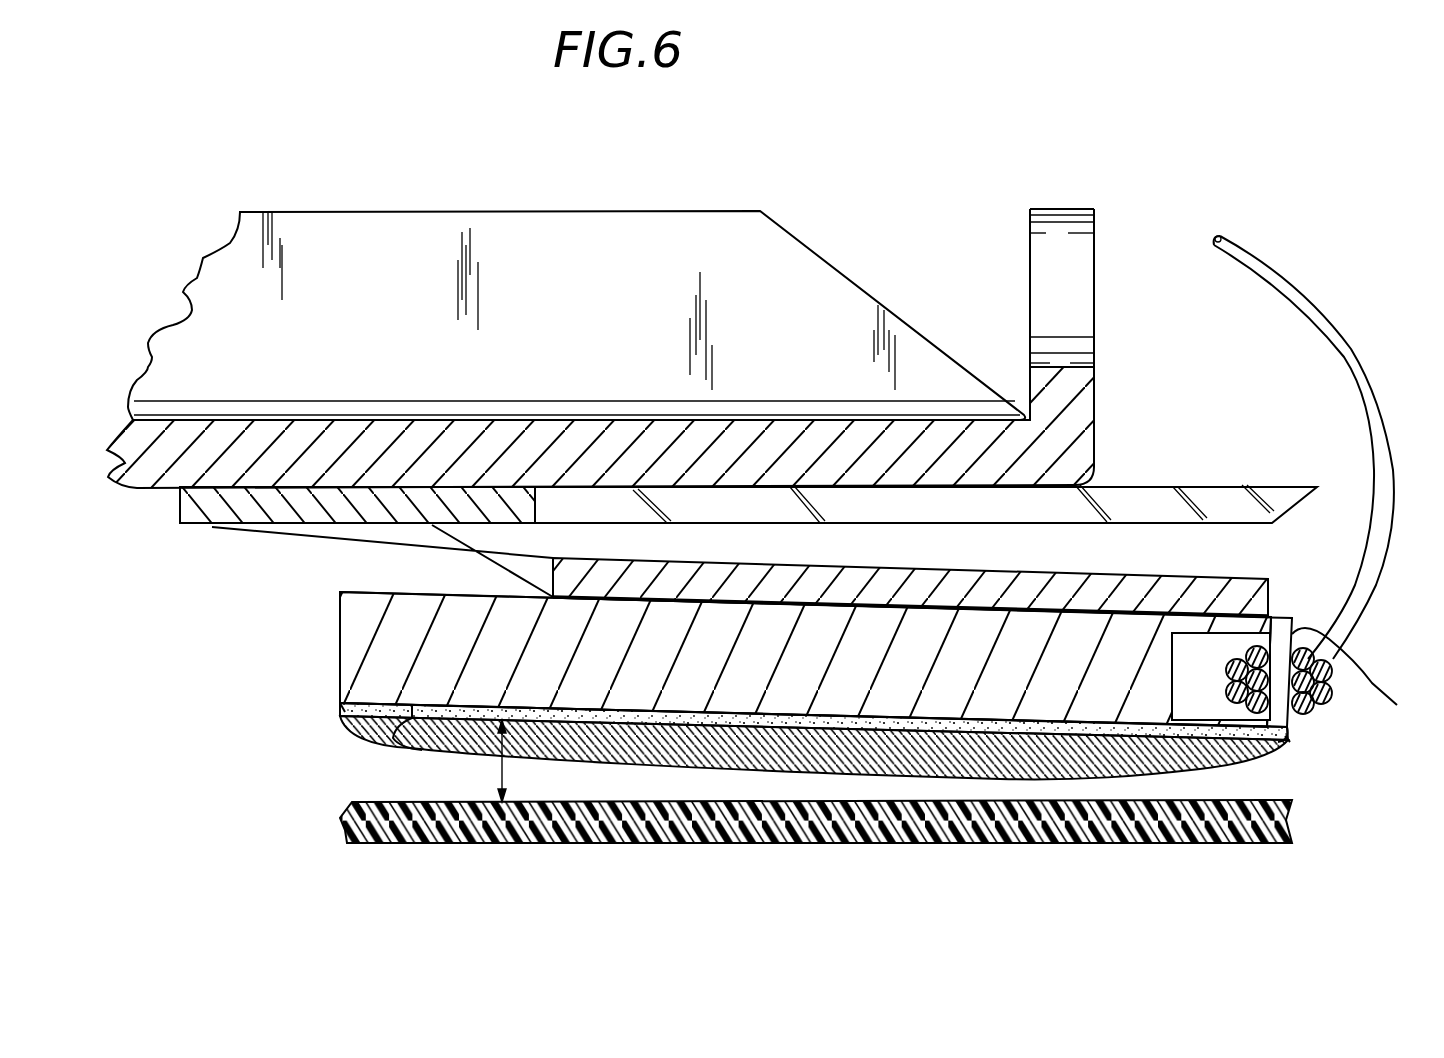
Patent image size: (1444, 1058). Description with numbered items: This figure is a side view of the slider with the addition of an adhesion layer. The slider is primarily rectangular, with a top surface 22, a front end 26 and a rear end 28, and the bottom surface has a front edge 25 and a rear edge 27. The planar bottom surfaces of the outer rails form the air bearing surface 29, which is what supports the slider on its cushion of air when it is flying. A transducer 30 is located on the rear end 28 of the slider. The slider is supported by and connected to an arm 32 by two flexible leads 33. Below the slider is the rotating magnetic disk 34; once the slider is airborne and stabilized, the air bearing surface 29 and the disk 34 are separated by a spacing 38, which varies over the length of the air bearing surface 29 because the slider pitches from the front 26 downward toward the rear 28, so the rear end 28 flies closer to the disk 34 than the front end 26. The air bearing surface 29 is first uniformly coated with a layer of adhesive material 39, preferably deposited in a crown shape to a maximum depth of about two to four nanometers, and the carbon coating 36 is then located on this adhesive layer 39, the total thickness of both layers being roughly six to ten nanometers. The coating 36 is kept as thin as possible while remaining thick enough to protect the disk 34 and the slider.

The top surface 22 is at (820, 669).
The front edge 25 is at (340, 710).
The front end 26 is at (340, 673).
The rear edge 27 is at (1290, 727).
The rear end 28 is at (1324, 480).
The air bearing surface 29 is at (393, 738).
The transducer 30 is at (1332, 697).
The arm 32 is at (1027, 283).
The flexible leads 33 is at (357, 537).
The rotating magnetic disk 34 is at (343, 818).
The coating 36 is at (400, 745).
The spacing 38 is at (502, 768).
The layer of adhesive material 39 is at (340, 702).